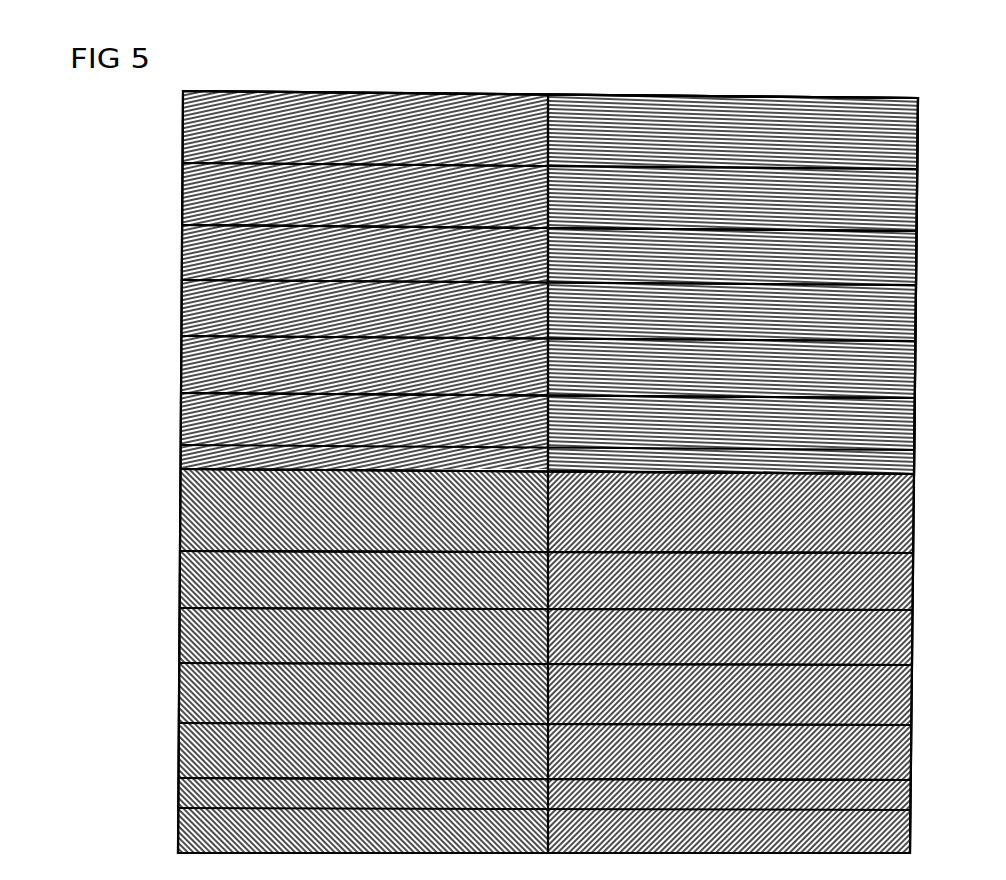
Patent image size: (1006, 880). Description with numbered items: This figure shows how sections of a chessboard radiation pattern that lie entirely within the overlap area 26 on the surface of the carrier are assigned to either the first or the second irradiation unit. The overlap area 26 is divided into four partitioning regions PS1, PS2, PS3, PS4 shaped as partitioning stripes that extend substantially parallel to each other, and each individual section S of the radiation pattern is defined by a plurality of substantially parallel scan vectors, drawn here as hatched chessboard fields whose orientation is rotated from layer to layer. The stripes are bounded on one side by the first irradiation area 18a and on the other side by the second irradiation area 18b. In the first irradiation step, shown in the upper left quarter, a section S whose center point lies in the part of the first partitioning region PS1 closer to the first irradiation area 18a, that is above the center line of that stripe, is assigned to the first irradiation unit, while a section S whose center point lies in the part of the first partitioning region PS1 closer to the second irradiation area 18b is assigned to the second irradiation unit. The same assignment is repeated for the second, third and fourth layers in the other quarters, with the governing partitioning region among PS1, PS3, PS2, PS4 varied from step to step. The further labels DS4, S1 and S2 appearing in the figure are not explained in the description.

The overlap area 26 is at (134, 337).
The section of the radiation pattern S is at (251, 85).
The drape section DS4 is at (690, 150).
The first irradiation area 18a is at (178, 123).
The second irradiation area 18b is at (176, 440).
The first partitioning region PS1 is at (175, 370).
The second partitioning region PS2 is at (177, 305).
The third partitioning region PS3 is at (177, 257).
The fourth partitioning region PS4 is at (177, 190).
The first seam S1 is at (169, 237).
The second seam S2 is at (166, 414).